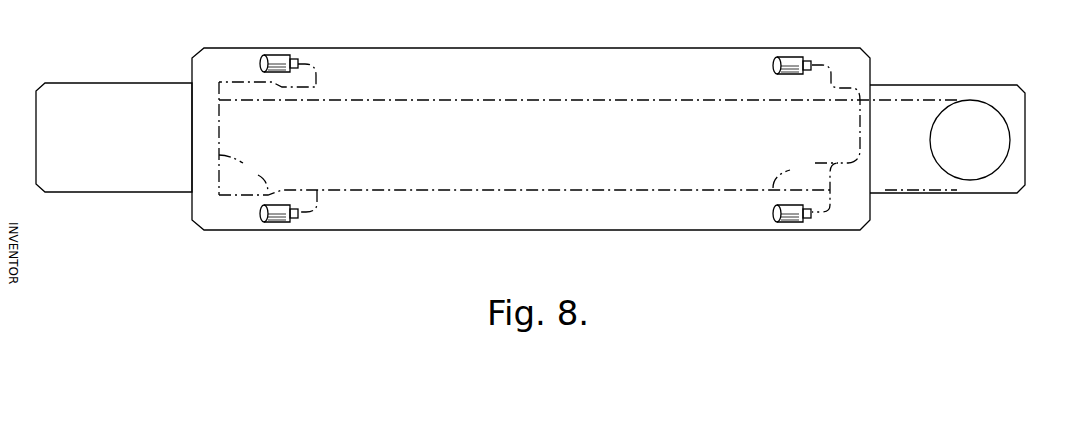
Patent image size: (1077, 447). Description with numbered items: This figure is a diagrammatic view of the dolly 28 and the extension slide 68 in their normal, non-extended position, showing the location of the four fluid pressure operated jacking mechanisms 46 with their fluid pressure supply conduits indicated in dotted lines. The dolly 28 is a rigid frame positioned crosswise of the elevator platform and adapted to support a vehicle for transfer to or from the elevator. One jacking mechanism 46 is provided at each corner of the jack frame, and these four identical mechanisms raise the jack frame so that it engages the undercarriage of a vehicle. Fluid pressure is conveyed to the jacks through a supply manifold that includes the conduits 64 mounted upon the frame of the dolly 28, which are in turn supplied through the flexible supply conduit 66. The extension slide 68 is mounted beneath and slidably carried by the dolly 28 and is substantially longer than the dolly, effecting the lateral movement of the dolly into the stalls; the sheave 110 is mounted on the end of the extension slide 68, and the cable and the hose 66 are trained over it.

The dolly 28 is at (863, 52).
The fluid pressure operated jacking mechanism 46 is at (275, 55).
The conduits 64 is at (528, 174).
The flexible supply conduit 66 is at (308, 100).
The extension slide 68 is at (950, 85).
The sheave 110 is at (1000, 130).